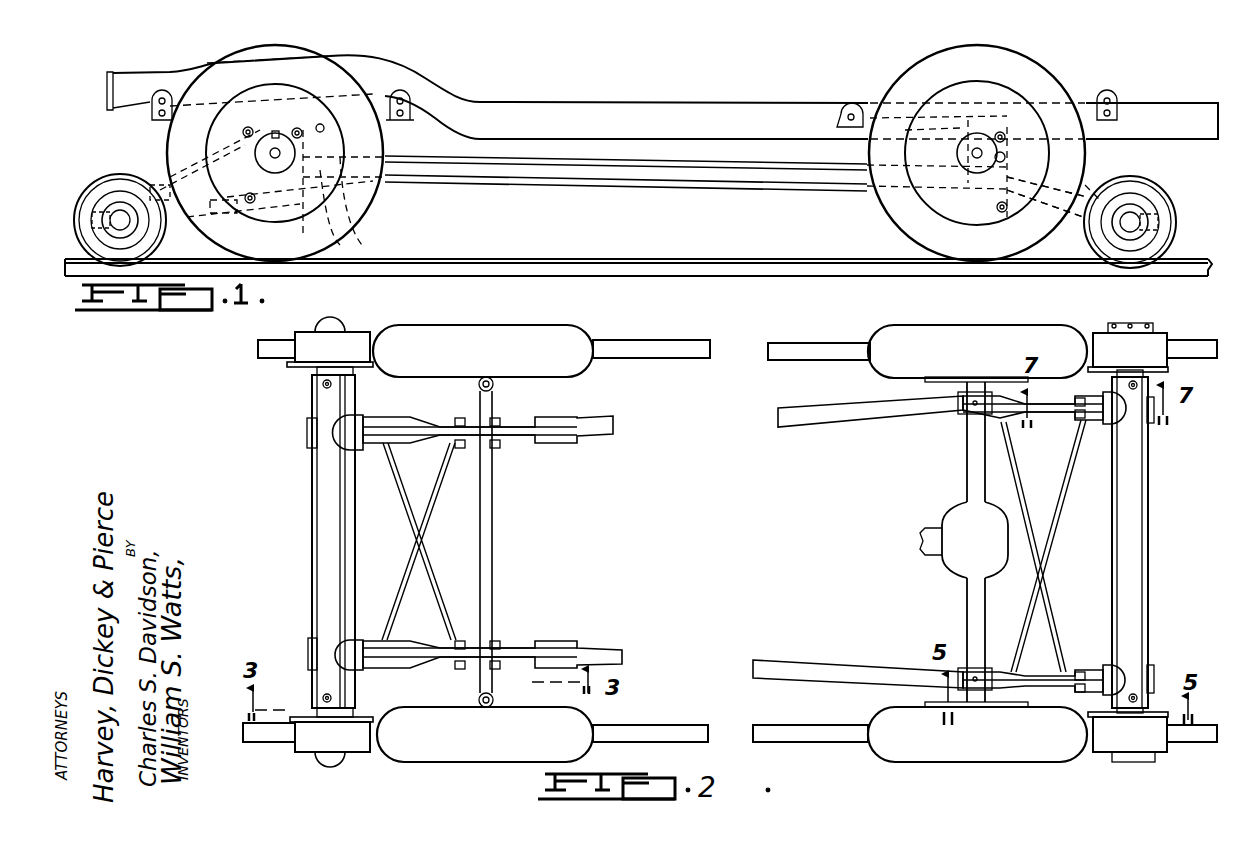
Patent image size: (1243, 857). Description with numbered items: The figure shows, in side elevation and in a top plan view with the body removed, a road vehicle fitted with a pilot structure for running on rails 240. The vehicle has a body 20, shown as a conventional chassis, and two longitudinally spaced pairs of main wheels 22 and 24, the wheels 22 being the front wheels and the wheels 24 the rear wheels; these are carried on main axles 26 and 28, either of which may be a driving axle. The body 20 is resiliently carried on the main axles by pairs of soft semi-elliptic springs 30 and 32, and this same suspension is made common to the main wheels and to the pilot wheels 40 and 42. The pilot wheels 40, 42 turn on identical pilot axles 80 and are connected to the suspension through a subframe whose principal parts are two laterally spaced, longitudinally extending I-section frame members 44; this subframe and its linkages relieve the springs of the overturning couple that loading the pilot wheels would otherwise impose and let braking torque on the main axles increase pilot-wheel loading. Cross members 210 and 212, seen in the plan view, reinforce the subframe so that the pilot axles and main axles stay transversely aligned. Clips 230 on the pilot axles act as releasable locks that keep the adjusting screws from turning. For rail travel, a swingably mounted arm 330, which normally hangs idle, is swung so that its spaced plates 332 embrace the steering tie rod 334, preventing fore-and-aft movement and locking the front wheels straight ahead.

In FIG. 1, the body 20 is at (600, 102).
In FIG. 1, the main wheels 22 is at (360, 214).
In FIG. 2, the main wheels 22 is at (593, 328).
In FIG. 1, the main wheels 24 is at (1035, 76).
In FIG. 2, the main wheels 24 is at (973, 335).
In FIG. 2, the main axle 26 is at (487, 547).
In FIG. 2, the main axle 28 is at (967, 472).
In FIG. 1, the semi-elliptic spring 30 is at (388, 94).
In FIG. 1, the semi-elliptic spring 32 is at (866, 110).
In FIG. 1, the pilot wheels 40 is at (111, 178).
In FIG. 2, the pilot wheels 40 is at (357, 338).
In FIG. 1, the pilot wheels 42 is at (1148, 198).
In FIG. 2, the pilot wheels 42 is at (1165, 340).
In FIG. 1, the frame members 44 is at (553, 178).
In FIG. 2, the frame members 44 is at (607, 418).
In FIG. 2, the axles 80 is at (320, 560).
In FIG. 2, the cross member 210 is at (1028, 613).
In FIG. 2, the cross member 212 is at (1055, 593).
In FIG. 2, the clips 230 is at (308, 452).
In FIG. 1, the rails 240 is at (767, 259).
In FIG. 2, the rails 240 is at (658, 727).
In FIG. 1, the swingably mounted arm 330 is at (303, 232).
In FIG. 1, the spaced plates 332 is at (348, 238).
In FIG. 1, the steering tie rod 334 is at (278, 131).